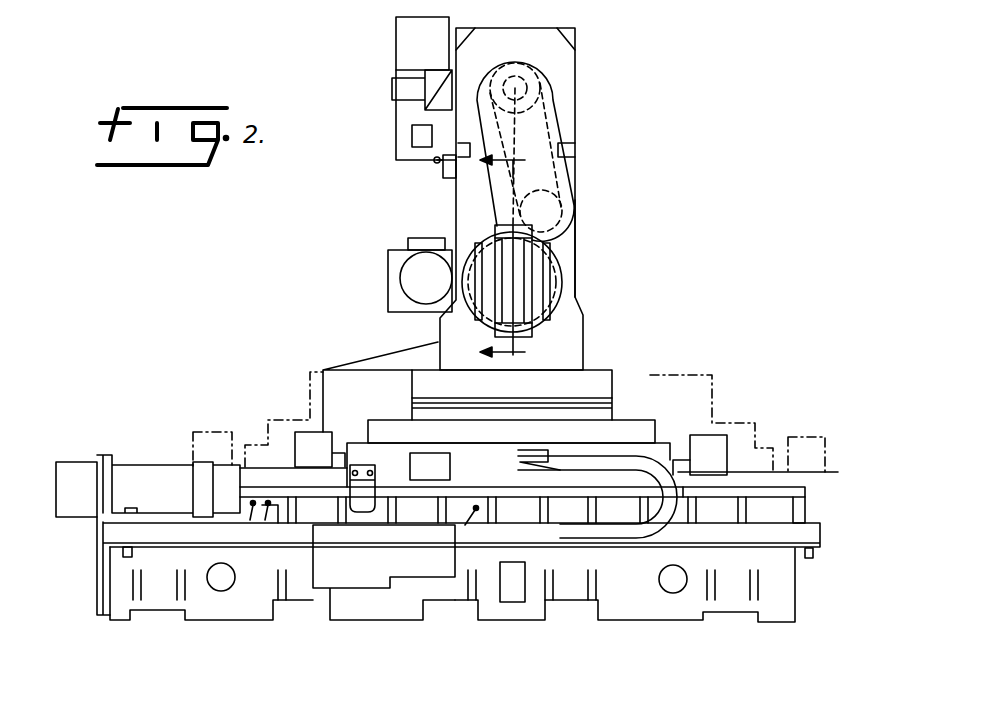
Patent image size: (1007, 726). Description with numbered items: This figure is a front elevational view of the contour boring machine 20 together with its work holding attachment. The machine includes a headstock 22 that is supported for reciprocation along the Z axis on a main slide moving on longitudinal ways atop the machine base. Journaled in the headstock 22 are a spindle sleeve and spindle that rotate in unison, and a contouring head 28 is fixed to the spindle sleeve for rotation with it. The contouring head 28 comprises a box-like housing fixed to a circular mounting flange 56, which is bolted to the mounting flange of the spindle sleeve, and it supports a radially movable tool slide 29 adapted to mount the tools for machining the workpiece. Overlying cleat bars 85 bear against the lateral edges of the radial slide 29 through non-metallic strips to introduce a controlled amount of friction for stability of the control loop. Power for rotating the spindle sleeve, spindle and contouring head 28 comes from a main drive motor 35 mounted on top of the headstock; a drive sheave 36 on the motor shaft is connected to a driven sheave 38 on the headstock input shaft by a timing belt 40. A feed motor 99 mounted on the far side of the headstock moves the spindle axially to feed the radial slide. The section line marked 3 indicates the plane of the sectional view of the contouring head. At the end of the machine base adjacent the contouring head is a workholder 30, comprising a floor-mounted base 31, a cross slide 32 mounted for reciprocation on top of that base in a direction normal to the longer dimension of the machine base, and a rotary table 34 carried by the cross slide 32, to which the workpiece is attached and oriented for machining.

The contour boring machine 20 is at (375, 70).
The headstock 22 is at (575, 190).
The contouring head 28 is at (567, 257).
The radial tool slide 29 is at (495, 235).
The workholder 30 is at (411, 394).
The workholder base 31 is at (380, 612).
The cross slide 32 is at (663, 460).
The rotary table 34 is at (612, 392).
The main drive motor 35 is at (570, 60).
The drive sheave 36 is at (515, 88).
The driven sheave 38 is at (560, 213).
The timing belt 40 is at (557, 125).
The circular mounting flange 56 is at (562, 278).
The cleat bars 85 is at (485, 297).
The feed motor 99 is at (408, 285).
The section line 3- 3 is at (512, 265).